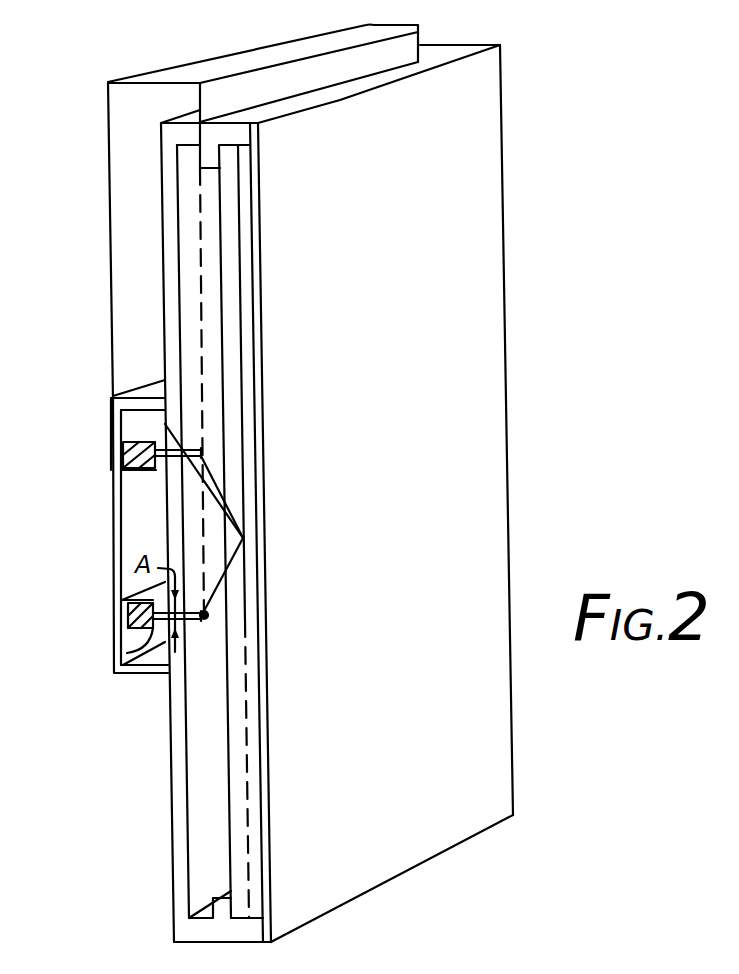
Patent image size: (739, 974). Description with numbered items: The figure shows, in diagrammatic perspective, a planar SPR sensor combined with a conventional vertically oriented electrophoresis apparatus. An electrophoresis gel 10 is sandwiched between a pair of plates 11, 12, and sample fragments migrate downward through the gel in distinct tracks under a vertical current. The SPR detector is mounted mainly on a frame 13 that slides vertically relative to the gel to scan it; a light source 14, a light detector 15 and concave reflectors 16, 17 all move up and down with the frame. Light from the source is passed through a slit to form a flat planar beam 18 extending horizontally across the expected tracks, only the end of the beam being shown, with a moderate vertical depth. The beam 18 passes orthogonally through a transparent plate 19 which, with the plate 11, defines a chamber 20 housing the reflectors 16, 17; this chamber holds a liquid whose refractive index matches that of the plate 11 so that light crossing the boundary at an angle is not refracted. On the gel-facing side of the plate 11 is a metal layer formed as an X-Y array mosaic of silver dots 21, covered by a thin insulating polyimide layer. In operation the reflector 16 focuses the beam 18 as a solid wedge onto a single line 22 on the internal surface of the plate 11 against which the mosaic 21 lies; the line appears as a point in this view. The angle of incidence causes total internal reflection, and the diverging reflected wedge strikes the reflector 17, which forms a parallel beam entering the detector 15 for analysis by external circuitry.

The electrophoresis gel 10 is at (250, 802).
The plate 11 is at (237, 733).
The plate 12 is at (257, 345).
The frame 13 is at (117, 68).
The light source 14 is at (128, 607).
The light detector 15 is at (150, 455).
The concave reflector 16 is at (207, 618).
The concave reflector 17 is at (200, 452).
The flat planar beam 18 is at (165, 641).
The plate 19 is at (175, 692).
The chamber 20 is at (188, 183).
The mosaic of silver dots 21 is at (238, 268).
The line 22 is at (243, 538).